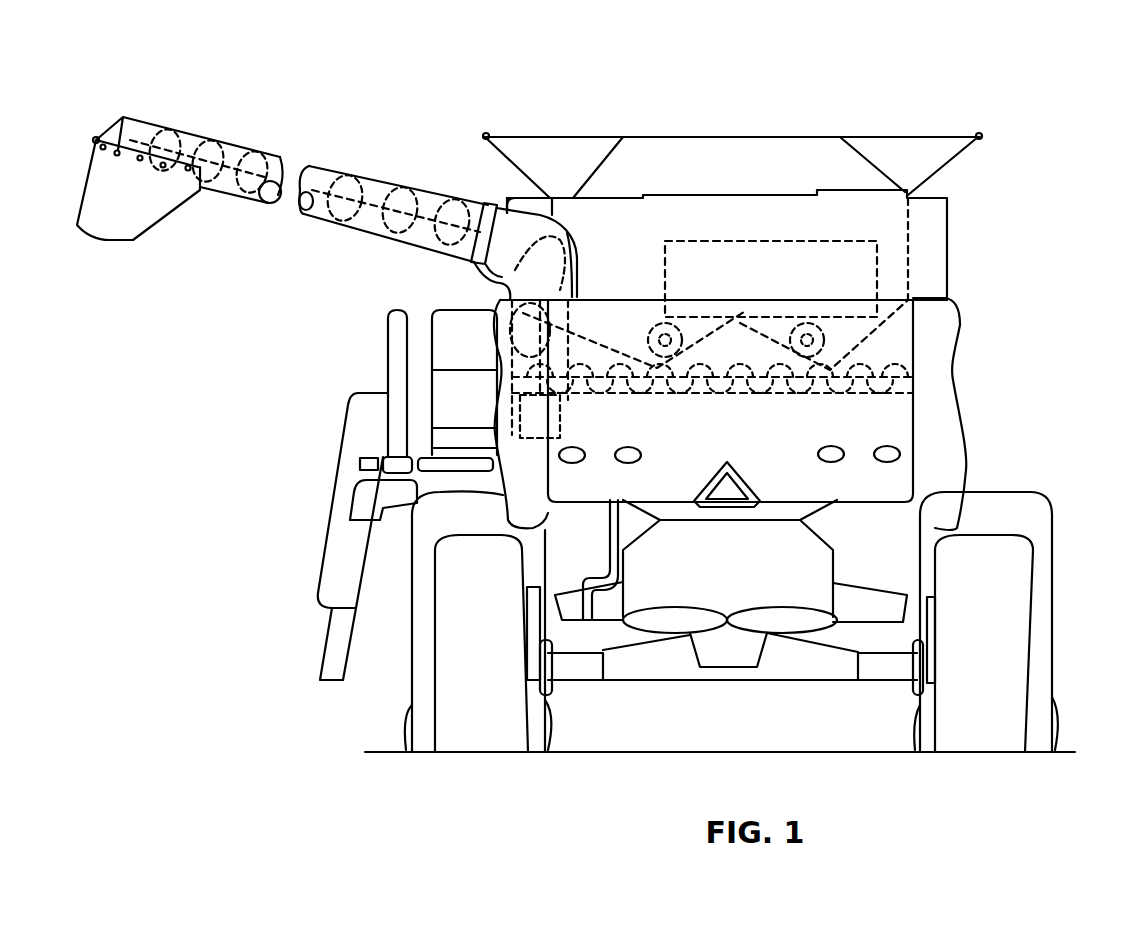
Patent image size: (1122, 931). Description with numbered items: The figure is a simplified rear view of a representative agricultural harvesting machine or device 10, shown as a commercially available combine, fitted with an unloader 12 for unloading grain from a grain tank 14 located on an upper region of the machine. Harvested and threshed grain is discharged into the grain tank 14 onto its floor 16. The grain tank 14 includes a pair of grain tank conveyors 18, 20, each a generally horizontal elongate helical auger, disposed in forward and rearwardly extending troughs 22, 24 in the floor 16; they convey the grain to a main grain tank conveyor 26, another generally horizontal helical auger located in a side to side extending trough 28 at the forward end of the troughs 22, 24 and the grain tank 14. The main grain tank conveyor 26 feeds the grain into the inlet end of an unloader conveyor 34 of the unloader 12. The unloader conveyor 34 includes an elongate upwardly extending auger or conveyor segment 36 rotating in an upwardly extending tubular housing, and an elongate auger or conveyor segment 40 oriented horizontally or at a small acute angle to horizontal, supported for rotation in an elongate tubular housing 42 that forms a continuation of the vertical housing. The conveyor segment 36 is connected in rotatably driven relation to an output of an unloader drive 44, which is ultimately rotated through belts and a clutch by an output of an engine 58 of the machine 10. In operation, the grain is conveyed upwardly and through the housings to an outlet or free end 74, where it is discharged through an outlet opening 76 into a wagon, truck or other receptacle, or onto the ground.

The agricultural harvesting machine or device 10 is at (940, 60).
The unloader 12 is at (441, 188).
The grain tank 14 is at (910, 217).
The floor 16 is at (748, 327).
The grain tank conveyor 18 is at (660, 325).
The grain tank conveyor 20 is at (810, 325).
The trough 22 is at (665, 360).
The trough 24 is at (813, 363).
The main grain tank conveyor 26 is at (897, 347).
The trough 28 is at (880, 395).
The unloader conveyor 34 is at (586, 268).
The upwardly extending auger or conveyor segment 36 is at (506, 296).
The auger or conveyor segment 40 is at (333, 182).
The tubular housing 42 is at (243, 203).
The unloader drive 44 is at (565, 412).
The engine 58 is at (758, 241).
The outlet or free end 74 is at (150, 120).
The outlet opening 76 is at (138, 237).